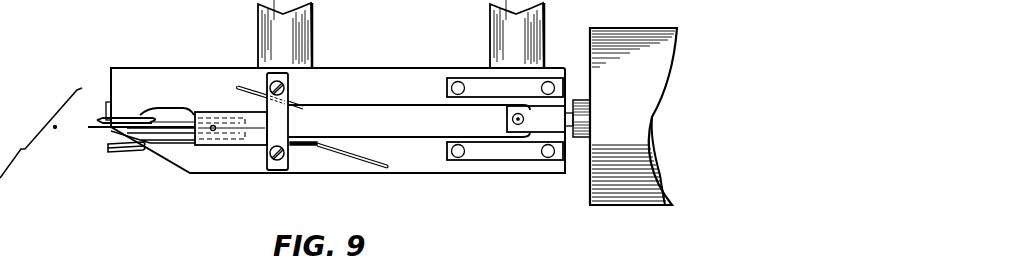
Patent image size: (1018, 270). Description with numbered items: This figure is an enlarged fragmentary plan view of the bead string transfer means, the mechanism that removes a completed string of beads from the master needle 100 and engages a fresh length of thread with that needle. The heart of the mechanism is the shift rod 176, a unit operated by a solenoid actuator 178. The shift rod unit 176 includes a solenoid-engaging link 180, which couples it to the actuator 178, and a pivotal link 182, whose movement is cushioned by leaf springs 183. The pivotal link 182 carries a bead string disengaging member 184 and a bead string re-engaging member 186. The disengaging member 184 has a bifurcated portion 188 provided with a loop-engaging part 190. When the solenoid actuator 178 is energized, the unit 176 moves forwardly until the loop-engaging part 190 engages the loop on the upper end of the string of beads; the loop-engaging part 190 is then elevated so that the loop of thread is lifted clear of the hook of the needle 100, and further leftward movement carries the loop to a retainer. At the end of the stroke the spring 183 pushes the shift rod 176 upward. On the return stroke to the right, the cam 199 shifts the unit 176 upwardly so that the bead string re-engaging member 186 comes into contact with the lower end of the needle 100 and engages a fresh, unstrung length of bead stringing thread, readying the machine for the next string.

The master needle 100 is at (0, 253).
The shift rod 176 is at (350, 117).
The solenoid actuator 178 is at (640, 103).
The solenoid-engaging link 180 is at (537, 122).
The pivotal link 182 is at (407, 130).
The leaf springs 183 is at (295, 104).
The bead string disengaging member 184 is at (160, 123).
The bead string re-engaging member 186 is at (172, 143).
The bifurcated portion 188 is at (117, 118).
The loop-engaging part 190 is at (88, 128).
The cam 199 is at (182, 110).